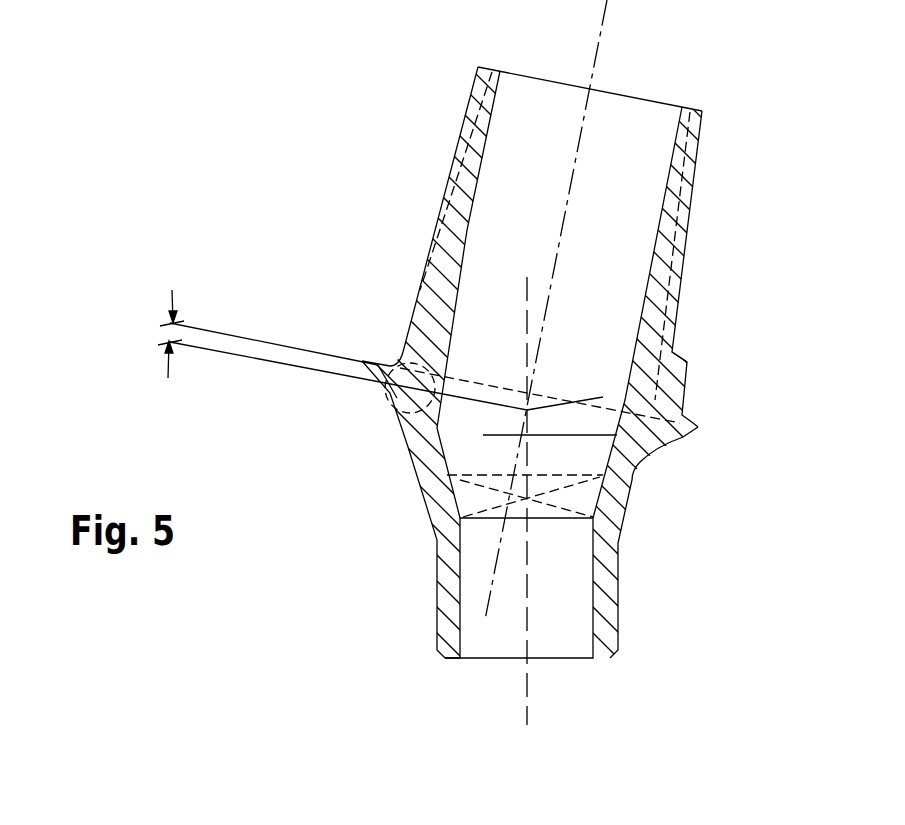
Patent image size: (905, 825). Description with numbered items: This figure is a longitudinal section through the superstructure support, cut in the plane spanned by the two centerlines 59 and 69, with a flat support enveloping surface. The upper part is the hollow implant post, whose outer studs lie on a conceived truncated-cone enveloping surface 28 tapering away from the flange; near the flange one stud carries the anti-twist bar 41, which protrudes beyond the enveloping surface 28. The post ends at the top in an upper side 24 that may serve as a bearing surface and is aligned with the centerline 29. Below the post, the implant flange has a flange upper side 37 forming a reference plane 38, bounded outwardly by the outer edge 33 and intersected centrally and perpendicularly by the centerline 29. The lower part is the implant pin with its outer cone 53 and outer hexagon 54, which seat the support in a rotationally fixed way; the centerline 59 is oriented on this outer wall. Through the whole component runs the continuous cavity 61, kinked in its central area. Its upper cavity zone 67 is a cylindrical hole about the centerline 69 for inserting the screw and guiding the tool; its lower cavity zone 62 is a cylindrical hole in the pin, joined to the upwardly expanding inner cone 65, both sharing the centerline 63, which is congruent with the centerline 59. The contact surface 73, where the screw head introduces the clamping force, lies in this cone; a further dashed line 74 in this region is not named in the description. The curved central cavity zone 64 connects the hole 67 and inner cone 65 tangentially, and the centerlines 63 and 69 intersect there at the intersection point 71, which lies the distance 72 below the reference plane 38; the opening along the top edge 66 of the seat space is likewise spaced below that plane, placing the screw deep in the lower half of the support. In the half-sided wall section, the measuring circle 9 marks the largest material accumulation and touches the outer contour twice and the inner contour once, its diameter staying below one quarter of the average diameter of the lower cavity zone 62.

The upper side 24 is at (613, 92).
The continuous cavity 61 is at (684, 95).
The enveloping surface 28 is at (453, 163).
The centerline 29 is at (556, 263).
The reference plane 38 is at (502, 388).
The flange upper side 37 is at (378, 365).
The distance 72 is at (165, 331).
The measuring circle 9 is at (385, 388).
The intersection point 71 is at (437, 428).
The central cavity zone 64 is at (527, 410).
The top edge 66 is at (483, 435).
The screw seat plane 74 is at (488, 475).
The inner cone 65 is at (455, 498).
The centerline 63 is at (527, 563).
The lower cavity zone 62 is at (460, 609).
The upper cavity zone 67 is at (663, 198).
The centerline 69 is at (557, 255).
The anti-twist bar 41 is at (675, 392).
The outer edge 33 is at (698, 427).
The contact surface 73 is at (528, 498).
The outer cone 53 is at (627, 505).
The centerline 59 is at (527, 554).
The outer hexagon 54 is at (618, 607).